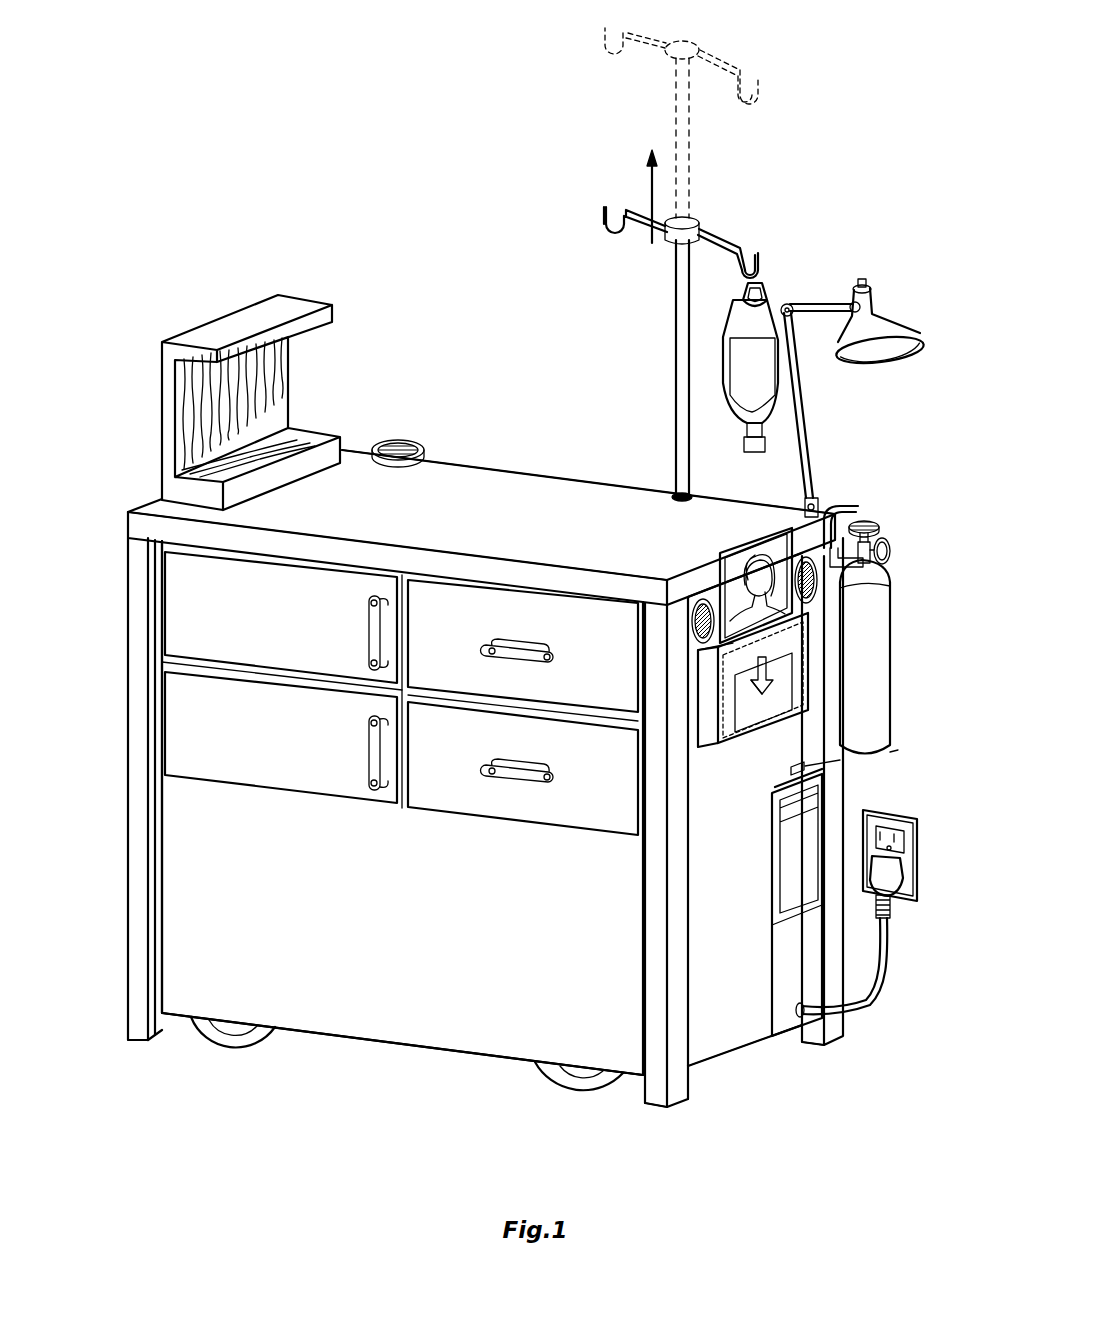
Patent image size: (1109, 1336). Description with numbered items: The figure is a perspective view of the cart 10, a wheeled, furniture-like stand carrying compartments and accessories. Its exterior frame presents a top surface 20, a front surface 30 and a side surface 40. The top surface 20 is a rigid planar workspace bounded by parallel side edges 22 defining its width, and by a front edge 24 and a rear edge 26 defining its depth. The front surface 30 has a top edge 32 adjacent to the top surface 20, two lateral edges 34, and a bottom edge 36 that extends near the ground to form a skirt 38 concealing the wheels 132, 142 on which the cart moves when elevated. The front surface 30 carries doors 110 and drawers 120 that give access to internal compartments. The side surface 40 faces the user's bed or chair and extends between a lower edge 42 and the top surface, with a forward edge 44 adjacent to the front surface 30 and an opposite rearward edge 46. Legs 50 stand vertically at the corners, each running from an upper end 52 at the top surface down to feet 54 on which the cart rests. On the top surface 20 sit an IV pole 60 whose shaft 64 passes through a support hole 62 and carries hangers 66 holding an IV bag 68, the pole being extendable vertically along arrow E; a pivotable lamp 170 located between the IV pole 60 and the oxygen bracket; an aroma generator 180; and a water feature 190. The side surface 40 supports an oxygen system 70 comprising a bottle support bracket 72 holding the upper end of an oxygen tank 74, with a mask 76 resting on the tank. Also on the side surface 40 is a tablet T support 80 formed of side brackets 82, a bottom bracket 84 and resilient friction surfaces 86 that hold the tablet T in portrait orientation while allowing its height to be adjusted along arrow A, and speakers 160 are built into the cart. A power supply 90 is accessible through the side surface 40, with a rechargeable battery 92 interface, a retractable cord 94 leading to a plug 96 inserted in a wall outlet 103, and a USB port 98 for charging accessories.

The cart 10 is at (419, 337).
The top surface 20 is at (487, 519).
The side edges 22 is at (142, 502).
The front edge 24 is at (347, 543).
The rear edge 26 is at (503, 462).
The front surface 30 is at (383, 864).
The top edge 32 is at (402, 587).
The lateral edges 34 is at (179, 665).
The bottom edge 36 is at (402, 1050).
The skirt 38 is at (416, 980).
The side surface 40 is at (727, 860).
The lower edge 42 is at (703, 1062).
The forward edge 44 is at (673, 1040).
The rearward edge 46 is at (813, 763).
The legs 50 is at (143, 852).
The upper end 52 is at (137, 607).
The feet 54 is at (143, 1040).
The IV pole 60 is at (659, 322).
The support hole 62 is at (690, 497).
The shaft 64 is at (677, 370).
The hanger 66 is at (605, 228).
The IV bag 68 is at (767, 385).
The oxygen system 70 is at (908, 573).
The bottle support bracket 72 is at (847, 510).
The oxygen tank 74 is at (883, 660).
The mask 76 is at (893, 540).
The tablet support 80 is at (719, 758).
The side brackets 82 is at (707, 730).
The bottom bracket 84 is at (743, 720).
The resilient friction surfaces 86 is at (697, 640).
The power supply 90 is at (785, 974).
The rechargeable battery 92 is at (786, 870).
The cord 94 is at (873, 1000).
The plug 96 is at (890, 895).
The USB port 98 is at (805, 770).
The wall outlet 103 is at (912, 860).
The doors 110 is at (252, 624).
The drawers 120 is at (432, 637).
The wheel 132 is at (233, 1040).
The wheel 142 is at (580, 1090).
The speakers 160 is at (700, 598).
The lamp 170 is at (897, 322).
The aroma generator 180 is at (398, 440).
The water feature 190 is at (242, 318).
The tablet T is at (738, 520).
The insertion arrow A is at (770, 673).
The arrow E is at (650, 185).